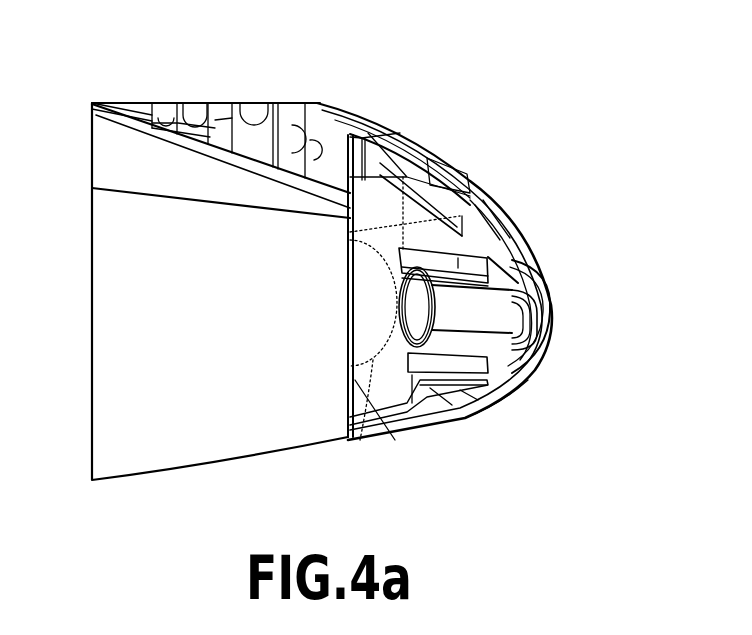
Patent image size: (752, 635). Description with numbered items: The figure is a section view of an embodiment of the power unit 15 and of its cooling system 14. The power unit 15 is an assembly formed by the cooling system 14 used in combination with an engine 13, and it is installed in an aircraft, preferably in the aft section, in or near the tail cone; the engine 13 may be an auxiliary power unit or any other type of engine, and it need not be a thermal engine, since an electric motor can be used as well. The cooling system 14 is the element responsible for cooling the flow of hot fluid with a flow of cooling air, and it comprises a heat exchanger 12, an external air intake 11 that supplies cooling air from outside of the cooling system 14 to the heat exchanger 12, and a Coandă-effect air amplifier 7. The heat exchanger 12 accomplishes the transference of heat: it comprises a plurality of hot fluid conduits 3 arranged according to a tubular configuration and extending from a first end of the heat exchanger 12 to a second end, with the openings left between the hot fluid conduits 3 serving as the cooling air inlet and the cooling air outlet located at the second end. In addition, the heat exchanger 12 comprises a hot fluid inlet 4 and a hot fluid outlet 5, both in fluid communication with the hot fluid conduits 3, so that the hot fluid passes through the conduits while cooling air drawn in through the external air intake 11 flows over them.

The power unit 15 is at (140, 80).
The engine 13 is at (188, 395).
The external air intake 11 is at (428, 147).
The heat exchanger 12 is at (493, 197).
The cooling system 14 is at (573, 224).
The Coandă-effect air amplifier 7 is at (556, 313).
The hot fluid inlet 4 is at (402, 400).
The hot fluid conduits 3 is at (457, 417).
The hot fluid outlet 5 is at (523, 388).